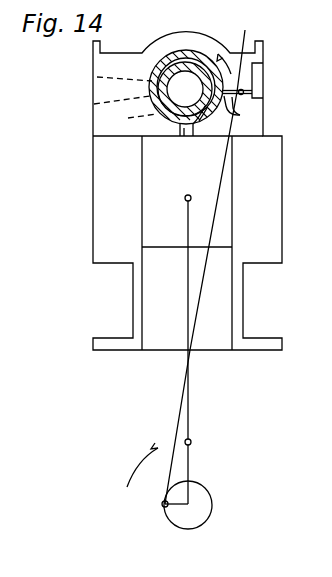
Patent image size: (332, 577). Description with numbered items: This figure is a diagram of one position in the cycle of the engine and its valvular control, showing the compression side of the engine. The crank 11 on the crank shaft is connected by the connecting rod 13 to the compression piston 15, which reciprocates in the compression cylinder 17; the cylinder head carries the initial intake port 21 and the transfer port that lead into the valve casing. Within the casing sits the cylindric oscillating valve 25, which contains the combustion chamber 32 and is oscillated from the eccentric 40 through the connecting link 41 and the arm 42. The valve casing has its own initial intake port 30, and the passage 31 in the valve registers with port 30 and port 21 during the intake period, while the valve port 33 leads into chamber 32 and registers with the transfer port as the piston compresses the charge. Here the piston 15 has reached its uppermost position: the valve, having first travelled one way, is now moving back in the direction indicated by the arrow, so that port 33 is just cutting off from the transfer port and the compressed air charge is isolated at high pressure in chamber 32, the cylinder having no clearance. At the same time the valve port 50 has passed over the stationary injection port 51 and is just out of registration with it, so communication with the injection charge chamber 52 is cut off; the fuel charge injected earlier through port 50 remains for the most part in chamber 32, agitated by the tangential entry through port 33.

The crank 11 is at (190, 472).
The connecting rod 13 is at (189, 402).
The compression piston 15 is at (173, 205).
The compression cylinder 17 is at (165, 292).
The initial intake port 21 is at (187, 139).
The cylindric oscillating valve 25 is at (177, 49).
The initial intake port 30 is at (93, 89).
The passage 31 is at (133, 121).
The combustion chamber 32 is at (222, 91).
The valve port 33 is at (201, 120).
The eccentric 40 is at (163, 508).
The connecting link 41 is at (200, 318).
The arm 42 is at (240, 115).
The valve port 50 is at (207, 52).
The stationary injection port 51 is at (211, 260).
The injection charge chamber 52 is at (261, 75).